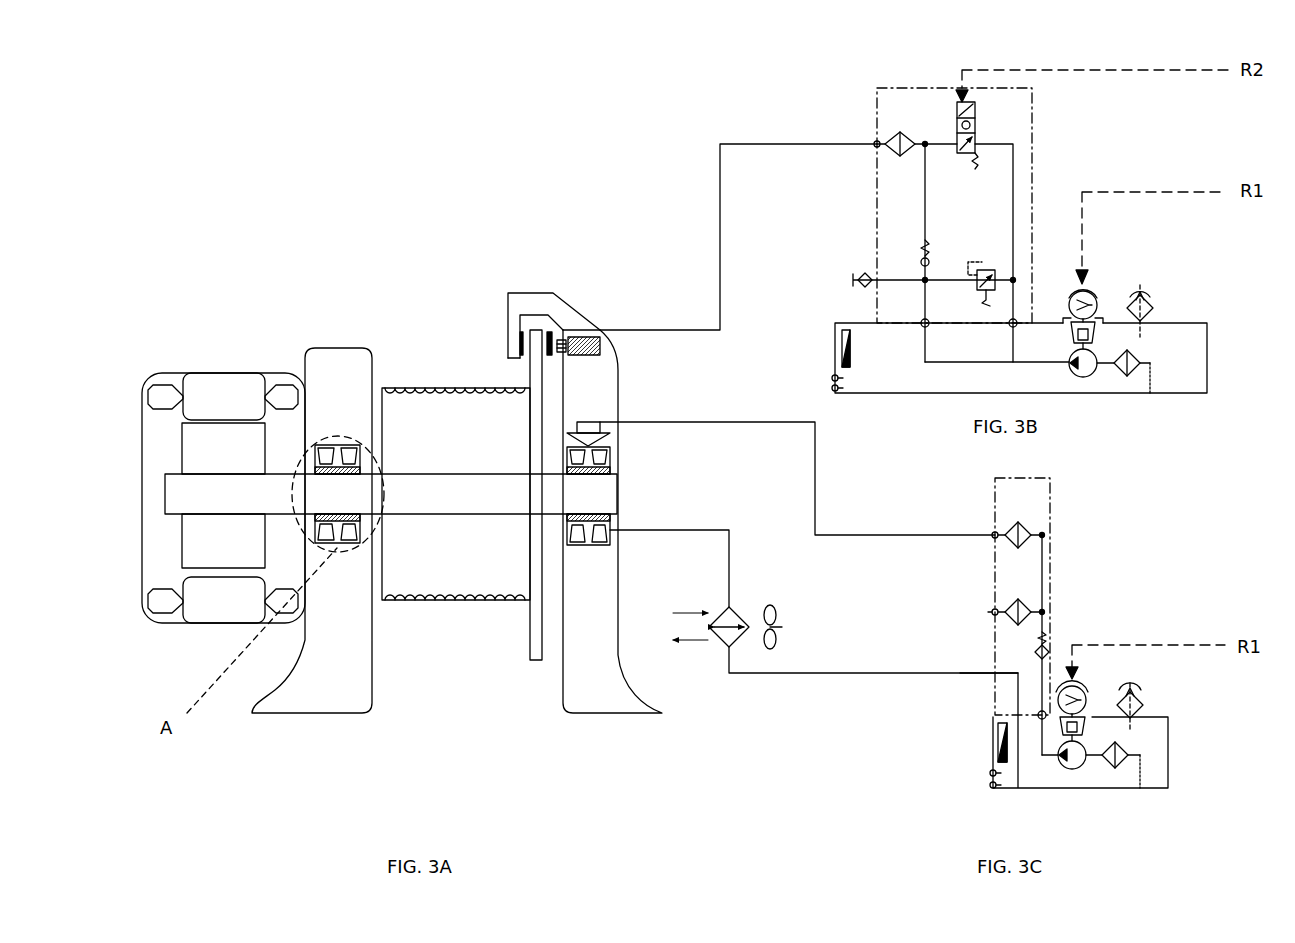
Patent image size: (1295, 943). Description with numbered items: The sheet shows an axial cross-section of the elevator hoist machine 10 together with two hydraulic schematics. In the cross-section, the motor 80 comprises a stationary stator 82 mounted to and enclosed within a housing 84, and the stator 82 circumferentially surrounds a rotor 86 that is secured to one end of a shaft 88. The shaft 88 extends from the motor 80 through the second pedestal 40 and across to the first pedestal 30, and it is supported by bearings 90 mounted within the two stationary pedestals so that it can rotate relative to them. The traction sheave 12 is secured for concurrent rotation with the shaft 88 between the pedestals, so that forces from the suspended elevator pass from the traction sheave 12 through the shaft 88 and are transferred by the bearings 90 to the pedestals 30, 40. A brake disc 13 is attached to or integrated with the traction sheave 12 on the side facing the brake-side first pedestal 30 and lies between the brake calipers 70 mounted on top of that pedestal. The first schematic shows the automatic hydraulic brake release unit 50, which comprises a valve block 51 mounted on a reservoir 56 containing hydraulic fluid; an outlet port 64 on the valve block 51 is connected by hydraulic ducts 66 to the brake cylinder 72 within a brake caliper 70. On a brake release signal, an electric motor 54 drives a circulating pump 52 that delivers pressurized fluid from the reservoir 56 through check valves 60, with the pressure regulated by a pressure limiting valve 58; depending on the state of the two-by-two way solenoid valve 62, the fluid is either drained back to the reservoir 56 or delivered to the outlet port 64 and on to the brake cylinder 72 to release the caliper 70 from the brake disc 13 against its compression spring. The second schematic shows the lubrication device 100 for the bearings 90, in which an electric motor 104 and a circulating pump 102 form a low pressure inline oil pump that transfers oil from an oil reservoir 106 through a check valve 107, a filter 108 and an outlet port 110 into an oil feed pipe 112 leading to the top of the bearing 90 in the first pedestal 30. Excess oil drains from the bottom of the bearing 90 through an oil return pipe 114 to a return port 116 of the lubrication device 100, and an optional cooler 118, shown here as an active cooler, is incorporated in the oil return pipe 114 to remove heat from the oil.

In FIG. 3A, the elevator hoist machine 10 is at (172, 165).
In FIG. 3A, the traction sheave 12 is at (452, 555).
In FIG. 3A, the brake disc 13 is at (533, 617).
In FIG. 3A, the first pedestal 30 is at (587, 683).
In FIG. 3A, the second pedestal 40 is at (328, 675).
In FIG. 3B, the automatic hydraulic brake release unit 50 is at (1218, 352).
In FIG. 3B, the valve block 51 is at (877, 100).
In FIG. 3B, the circulating pump 52 is at (1083, 363).
In FIG. 3B, the electric motor 54 is at (1098, 295).
In FIG. 3B, the reservoir 56 is at (1196, 311).
In FIG. 3B, the pressure limiting valve 58 is at (975, 270).
In FIG. 3B, the check valves 60 is at (925, 262).
In FIG. 3B, the 2/2 way solenoid valve 62 is at (975, 128).
In FIG. 3B, the outlet port 64 is at (877, 144).
In FIG. 3A, the hydraulic ducts 66 is at (720, 250).
In FIG. 3A, the brake caliper 70 is at (500, 282).
In FIG. 3A, the brake cylinder 72 is at (573, 338).
In FIG. 3A, the motor 80 is at (158, 368).
In FIG. 3A, the stator 82 is at (213, 603).
In FIG. 3A, the housing 84 is at (140, 422).
In FIG. 3A, the rotor 86 is at (213, 530).
In FIG. 3A, the shaft 88 is at (228, 497).
In FIG. 3A, the bearings 90 is at (336, 450).
In FIG. 3C, the lubrication device 100 is at (1095, 522).
In FIG. 3C, the circulating pump 102 is at (1078, 755).
In FIG. 3C, the electric motor 104 is at (1080, 700).
In FIG. 3C, the oil reservoir 106 is at (1153, 763).
In FIG. 3C, the check valve 107 is at (1048, 650).
In FIG. 3C, the filter 108 is at (1042, 537).
In FIG. 3C, the outlet port 110 is at (995, 535).
In FIG. 3A, the oil feed pipe 112 is at (815, 480).
In FIG. 3A, the oil return pipe 114 is at (805, 673).
In FIG. 3C, the return port 116 is at (1000, 673).
In FIG. 3A, the cooler 118 is at (737, 645).